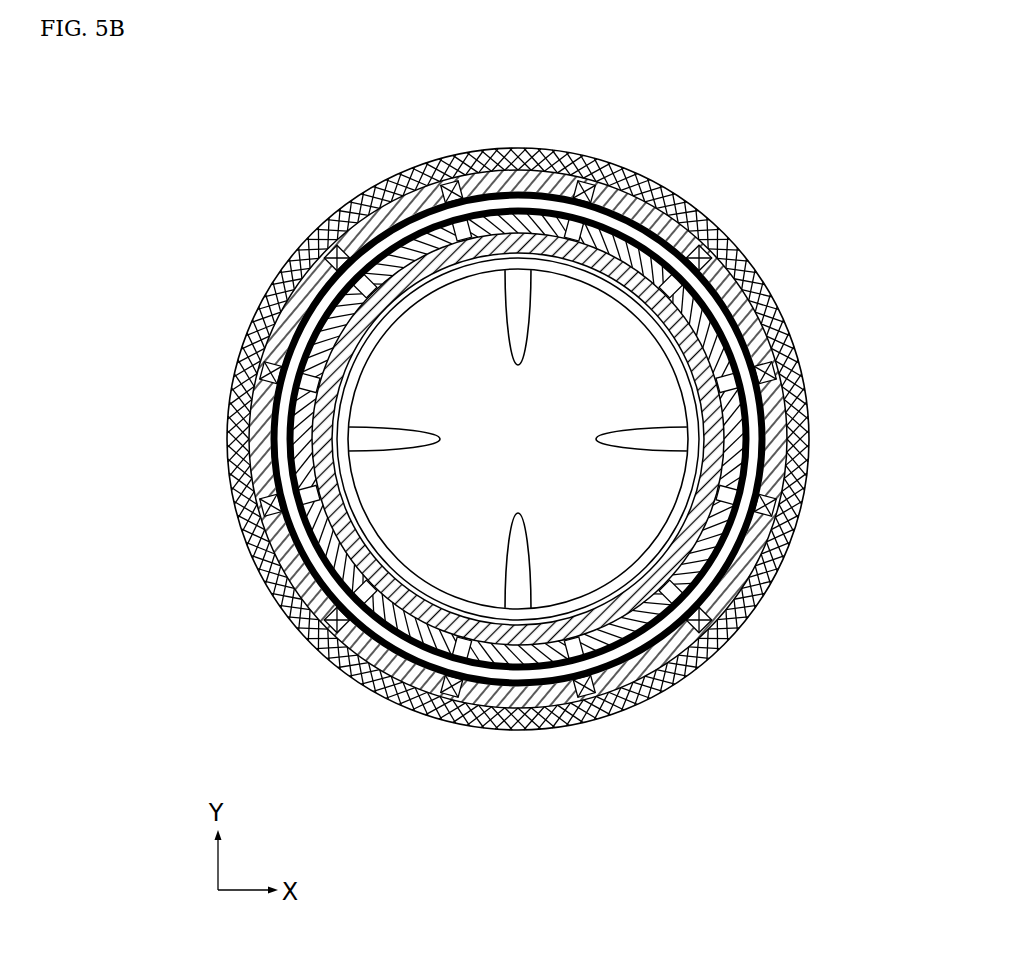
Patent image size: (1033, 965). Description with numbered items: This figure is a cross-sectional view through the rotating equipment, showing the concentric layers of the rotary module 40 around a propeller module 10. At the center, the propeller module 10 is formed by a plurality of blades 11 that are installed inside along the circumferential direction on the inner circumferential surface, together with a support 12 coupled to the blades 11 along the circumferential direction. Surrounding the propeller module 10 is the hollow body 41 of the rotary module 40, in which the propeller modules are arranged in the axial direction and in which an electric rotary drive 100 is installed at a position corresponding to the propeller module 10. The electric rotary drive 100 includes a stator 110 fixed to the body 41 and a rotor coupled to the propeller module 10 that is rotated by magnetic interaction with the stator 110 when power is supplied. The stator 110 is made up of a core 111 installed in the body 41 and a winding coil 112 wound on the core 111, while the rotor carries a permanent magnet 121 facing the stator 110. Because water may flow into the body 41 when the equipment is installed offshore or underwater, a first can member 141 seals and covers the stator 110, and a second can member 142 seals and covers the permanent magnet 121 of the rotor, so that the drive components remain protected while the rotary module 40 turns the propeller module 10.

The propeller module 10 is at (518, 501).
The blade 11 is at (642, 443).
The support 12 is at (597, 607).
The rotary module 40 is at (488, 414).
The body 41 is at (752, 266).
The electric rotary drive 100 is at (515, 472).
The stator 110 is at (518, 450).
The core 111 is at (373, 673).
The winding coil 112 is at (445, 693).
The permanent magnet 121 is at (513, 655).
The first can member 141 is at (229, 428).
The second can member 142 is at (243, 468).